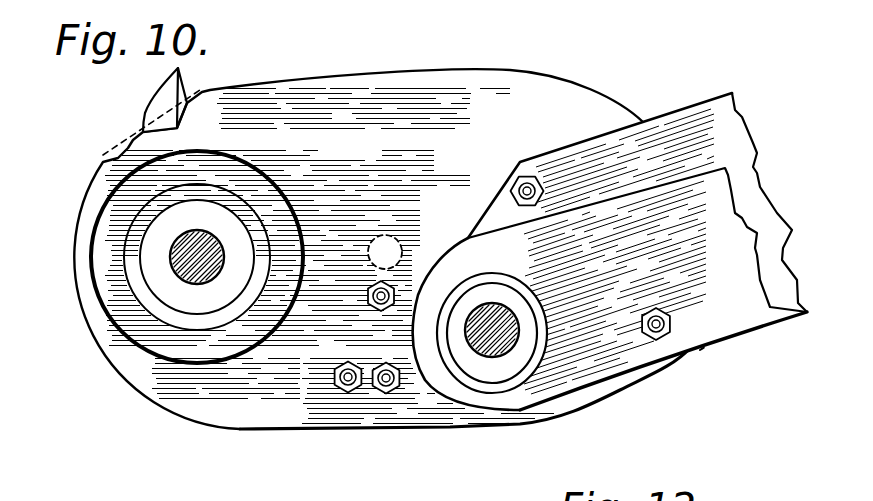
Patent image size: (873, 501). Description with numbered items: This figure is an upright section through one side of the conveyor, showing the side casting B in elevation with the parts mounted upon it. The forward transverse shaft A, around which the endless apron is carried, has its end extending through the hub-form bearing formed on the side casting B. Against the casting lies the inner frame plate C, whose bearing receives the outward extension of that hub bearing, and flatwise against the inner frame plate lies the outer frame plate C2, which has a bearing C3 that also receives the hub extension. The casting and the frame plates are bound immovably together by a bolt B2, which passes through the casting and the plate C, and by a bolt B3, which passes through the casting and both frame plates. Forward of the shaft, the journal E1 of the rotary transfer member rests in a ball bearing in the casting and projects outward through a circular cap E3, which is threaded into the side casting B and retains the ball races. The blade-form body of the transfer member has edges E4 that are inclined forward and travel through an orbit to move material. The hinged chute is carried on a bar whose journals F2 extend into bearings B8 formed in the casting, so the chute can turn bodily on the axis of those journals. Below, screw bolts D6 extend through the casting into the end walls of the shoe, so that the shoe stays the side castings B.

The side casting B is at (406, 89).
The edges E4 is at (162, 88).
The journal E1 is at (183, 260).
The circular cap E3 is at (170, 313).
The bearings B8 is at (382, 240).
The journals F2 is at (397, 248).
The bolt B2 is at (527, 180).
The inner frame plate C is at (725, 130).
The outer frame plate C2 is at (724, 231).
The bolt B3 is at (662, 332).
The forward transverse shaft A is at (498, 347).
The bearing C3 is at (458, 365).
The screw bolts D6 is at (372, 312).